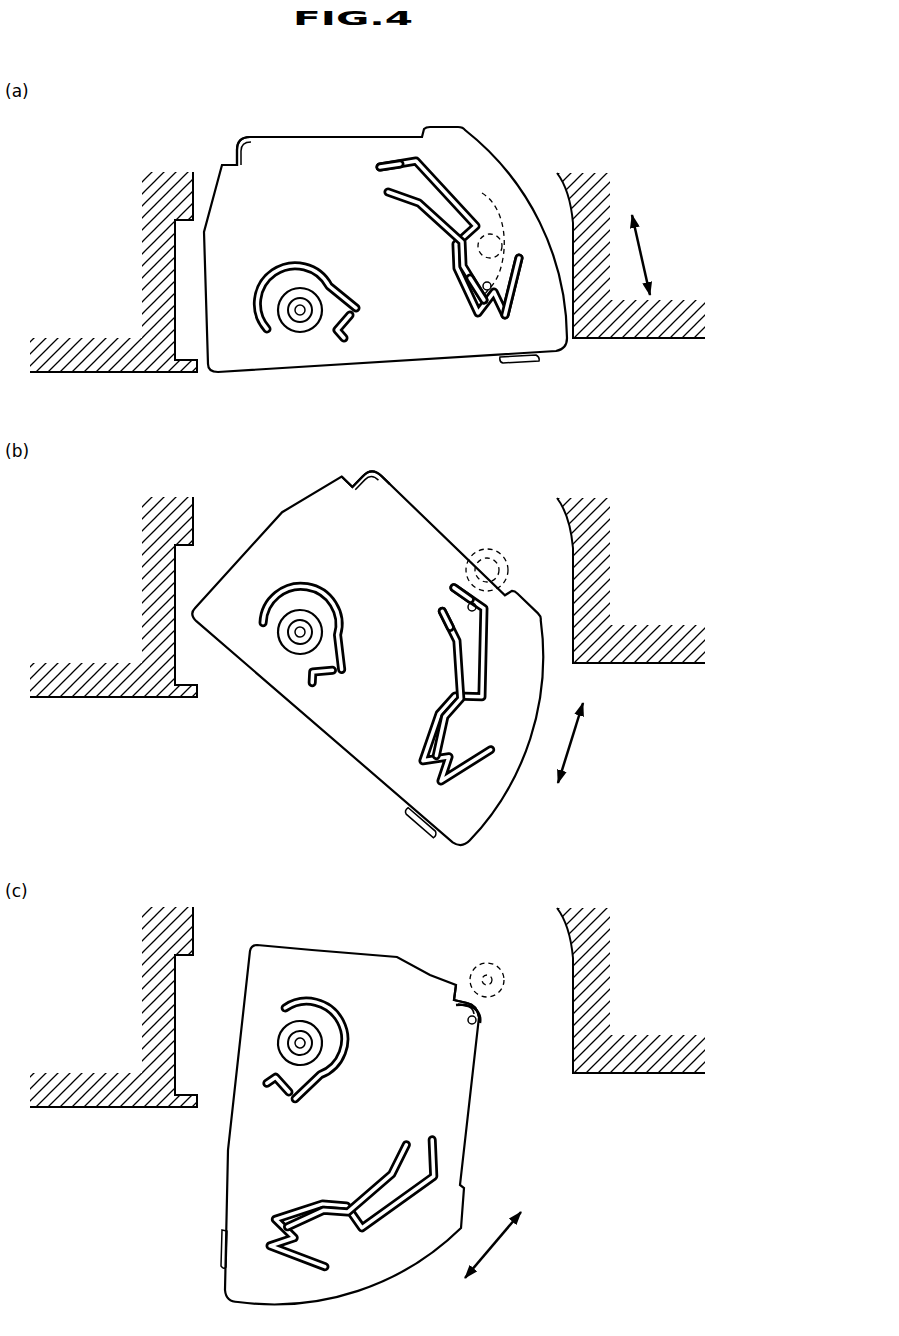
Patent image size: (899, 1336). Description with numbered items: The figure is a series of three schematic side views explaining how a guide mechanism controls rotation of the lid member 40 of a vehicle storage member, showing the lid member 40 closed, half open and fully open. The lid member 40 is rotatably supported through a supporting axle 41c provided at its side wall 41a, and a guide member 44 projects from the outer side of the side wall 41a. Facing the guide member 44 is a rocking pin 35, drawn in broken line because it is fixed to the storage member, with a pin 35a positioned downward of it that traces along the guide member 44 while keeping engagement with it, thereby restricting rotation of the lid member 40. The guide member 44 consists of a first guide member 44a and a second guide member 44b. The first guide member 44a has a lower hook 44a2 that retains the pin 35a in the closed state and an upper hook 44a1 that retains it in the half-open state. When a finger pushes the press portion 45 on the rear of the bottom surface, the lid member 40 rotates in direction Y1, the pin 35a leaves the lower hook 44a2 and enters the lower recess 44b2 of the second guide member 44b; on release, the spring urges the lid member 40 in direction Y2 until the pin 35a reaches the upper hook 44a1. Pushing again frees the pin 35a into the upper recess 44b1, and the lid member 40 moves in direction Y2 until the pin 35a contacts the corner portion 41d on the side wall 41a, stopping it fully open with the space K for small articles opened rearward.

The lid member 40 is at (470, 130).
The side wall 41a is at (270, 147).
The supporting axle 41c is at (297, 340).
The corner portion 41d is at (487, 1008).
The guide member 44 is at (506, 693).
The first guide member 44a is at (462, 670).
The upper hook 44a1 is at (377, 166).
The lower hook 44a2 is at (503, 297).
The second guide member 44b is at (370, 716).
The upper recess 44b1 is at (448, 637).
The lower recess 44b2 is at (438, 315).
The rocking pin 35 is at (508, 970).
The pin 35a is at (498, 295).
The press portion 45 is at (515, 360).
The space K is at (405, 1122).
The direction Y1 is at (565, 740).
The direction Y2 is at (590, 786).